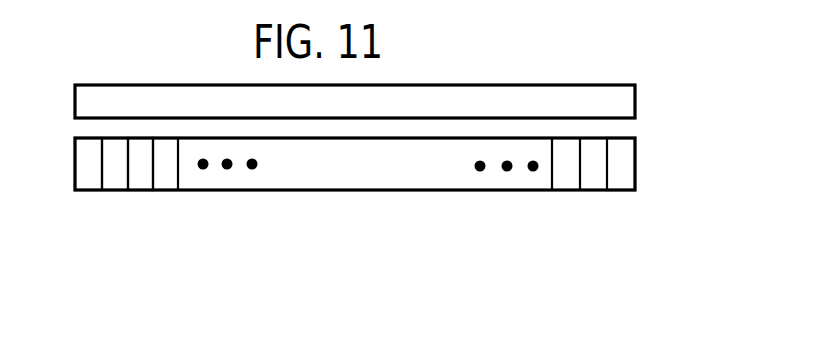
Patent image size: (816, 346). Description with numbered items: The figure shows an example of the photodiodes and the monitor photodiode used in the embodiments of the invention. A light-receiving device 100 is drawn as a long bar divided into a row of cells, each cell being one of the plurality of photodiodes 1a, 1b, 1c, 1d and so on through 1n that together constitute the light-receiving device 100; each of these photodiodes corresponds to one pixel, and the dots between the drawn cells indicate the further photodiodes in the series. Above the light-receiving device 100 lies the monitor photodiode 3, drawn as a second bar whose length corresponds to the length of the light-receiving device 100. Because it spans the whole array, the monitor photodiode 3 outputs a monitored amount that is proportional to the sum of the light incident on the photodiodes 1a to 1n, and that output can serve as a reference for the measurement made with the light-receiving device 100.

The monitor photodiode 3 is at (635, 102).
The light-receiving device 100 is at (635, 167).
The photodiode 1a is at (92, 190).
The photodiode 1b is at (115, 190).
The photodiode 1c is at (142, 190).
The photodiode 1d is at (165, 190).
The photodiode 1n is at (622, 190).